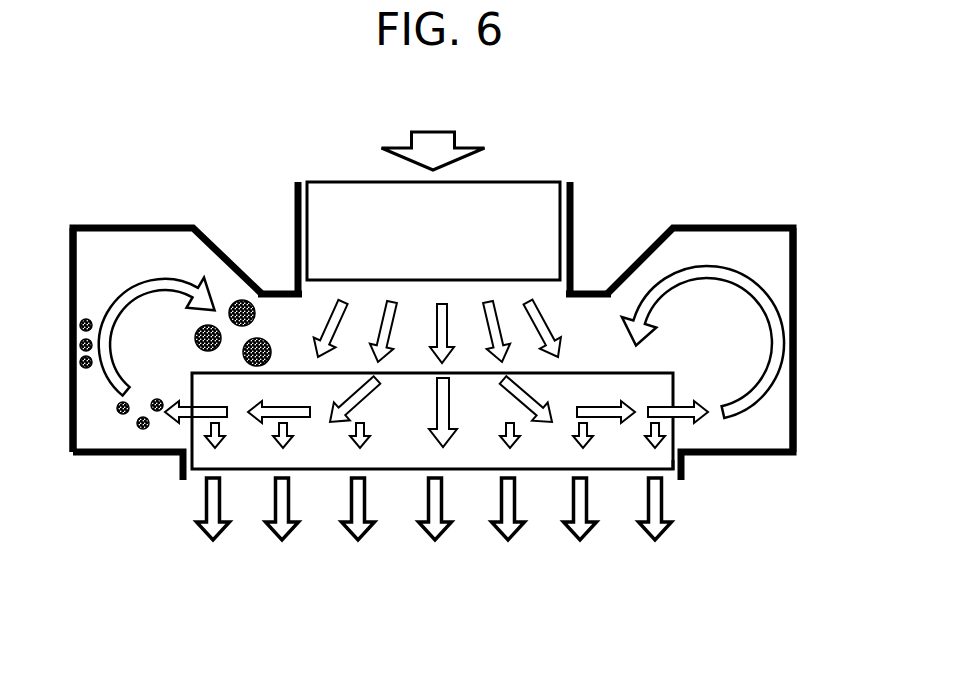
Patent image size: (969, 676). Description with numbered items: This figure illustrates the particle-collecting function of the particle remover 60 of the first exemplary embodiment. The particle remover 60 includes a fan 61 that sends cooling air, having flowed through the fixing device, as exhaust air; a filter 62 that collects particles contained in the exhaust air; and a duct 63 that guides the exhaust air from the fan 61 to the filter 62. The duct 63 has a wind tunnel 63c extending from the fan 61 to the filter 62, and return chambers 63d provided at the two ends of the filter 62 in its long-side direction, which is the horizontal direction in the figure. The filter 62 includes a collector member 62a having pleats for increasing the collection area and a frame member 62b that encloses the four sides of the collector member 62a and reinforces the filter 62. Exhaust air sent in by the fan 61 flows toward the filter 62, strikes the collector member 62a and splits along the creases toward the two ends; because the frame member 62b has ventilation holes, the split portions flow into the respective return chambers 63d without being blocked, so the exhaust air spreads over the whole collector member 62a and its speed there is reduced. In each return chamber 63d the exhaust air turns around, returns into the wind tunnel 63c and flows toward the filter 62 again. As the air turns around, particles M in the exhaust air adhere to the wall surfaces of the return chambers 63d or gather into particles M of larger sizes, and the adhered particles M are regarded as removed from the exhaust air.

The particle remover 60 is at (237, 152).
The fan 61 is at (493, 193).
The filter 62 is at (457, 490).
The collector member 62a is at (327, 473).
The frame member 62b is at (675, 430).
The duct 63 is at (632, 240).
The wind tunnel 63c is at (580, 291).
The return chambers 63d is at (80, 287).
The particles M is at (256, 305).